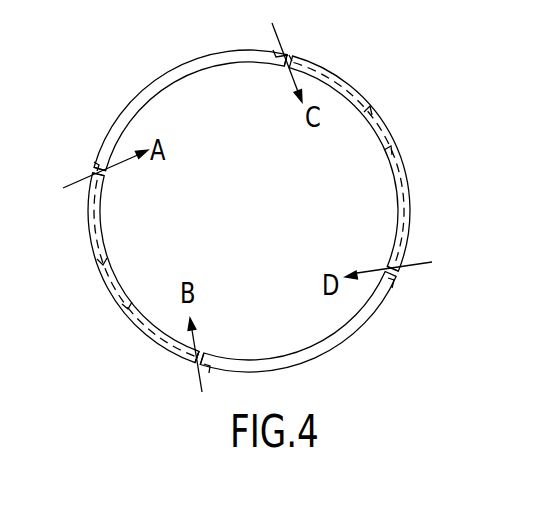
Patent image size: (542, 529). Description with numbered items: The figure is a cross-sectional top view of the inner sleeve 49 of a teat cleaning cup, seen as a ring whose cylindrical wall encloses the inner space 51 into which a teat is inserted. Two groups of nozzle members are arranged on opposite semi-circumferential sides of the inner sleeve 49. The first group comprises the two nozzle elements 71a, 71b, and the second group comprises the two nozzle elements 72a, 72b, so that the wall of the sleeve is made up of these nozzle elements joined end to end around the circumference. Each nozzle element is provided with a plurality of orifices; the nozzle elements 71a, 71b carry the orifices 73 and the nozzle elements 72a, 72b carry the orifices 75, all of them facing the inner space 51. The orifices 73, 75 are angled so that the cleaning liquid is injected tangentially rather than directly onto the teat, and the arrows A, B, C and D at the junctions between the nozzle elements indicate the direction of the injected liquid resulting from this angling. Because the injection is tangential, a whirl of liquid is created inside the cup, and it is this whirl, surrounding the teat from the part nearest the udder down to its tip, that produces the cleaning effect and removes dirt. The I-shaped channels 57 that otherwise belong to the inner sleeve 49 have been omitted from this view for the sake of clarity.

The inner sleeve 49 is at (339, 356).
The inner space 51 is at (192, 108).
The I-shaped channels 57 is at (530, 64).
The nozzle element 71a is at (86, 185).
The nozzle element 71b is at (192, 362).
The nozzle element 72a is at (288, 64).
The nozzle element 72b is at (395, 264).
The orifices 73 is at (105, 172).
The orifices 75 is at (282, 66).